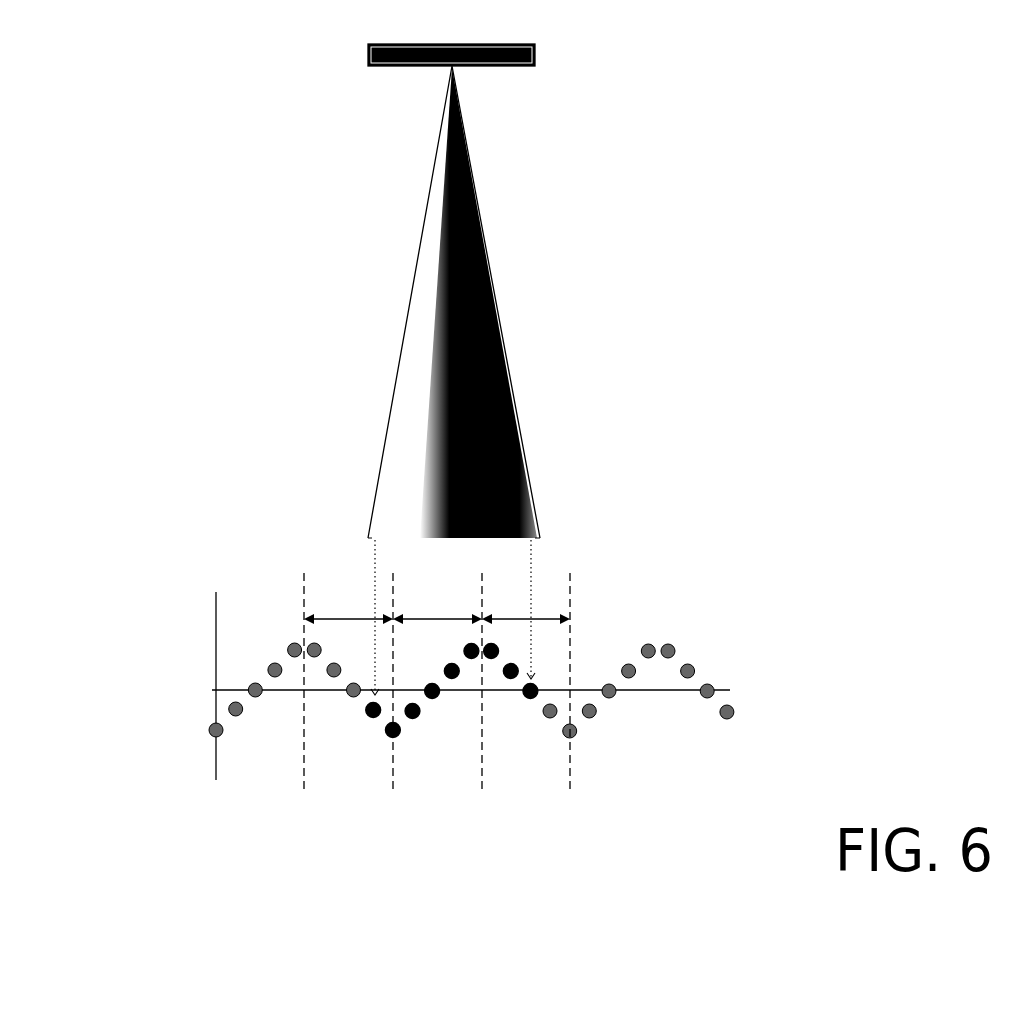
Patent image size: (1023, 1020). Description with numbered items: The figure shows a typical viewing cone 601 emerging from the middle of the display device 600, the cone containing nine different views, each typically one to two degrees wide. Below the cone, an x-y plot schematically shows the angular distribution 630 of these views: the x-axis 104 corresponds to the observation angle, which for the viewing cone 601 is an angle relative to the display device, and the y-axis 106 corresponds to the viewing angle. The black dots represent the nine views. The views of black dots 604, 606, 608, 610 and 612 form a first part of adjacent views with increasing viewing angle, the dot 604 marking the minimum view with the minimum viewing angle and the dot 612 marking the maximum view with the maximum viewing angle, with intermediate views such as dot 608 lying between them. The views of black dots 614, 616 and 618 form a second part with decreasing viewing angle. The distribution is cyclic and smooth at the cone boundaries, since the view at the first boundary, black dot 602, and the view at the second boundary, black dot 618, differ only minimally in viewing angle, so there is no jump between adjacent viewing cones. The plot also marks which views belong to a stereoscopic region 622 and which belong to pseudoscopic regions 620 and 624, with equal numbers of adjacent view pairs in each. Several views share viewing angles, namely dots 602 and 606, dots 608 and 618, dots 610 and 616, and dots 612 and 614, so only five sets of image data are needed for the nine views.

The display device 600 is at (523, 59).
The viewing cone 601 is at (490, 263).
The black dot at first boundary of viewing cone 602 is at (372, 717).
The black dot of minimum view 604 is at (392, 737).
The black dot of view 606 is at (412, 718).
The black dot of view 608 is at (434, 698).
The black dot of view 610 is at (453, 678).
The black dot of maximum view 612 is at (471, 658).
The black dot of view 614 is at (490, 658).
The black dot of view 616 is at (512, 678).
The black dot at second boundary of viewing cone 618 is at (532, 698).
The pseudoscopic region 620 is at (348, 681).
The stereoscopic region 622 is at (437, 681).
The pseudoscopic region 624 is at (526, 681).
The angular distribution 630 is at (443, 716).
The x-axis 104 is at (687, 692).
The y-axis 106 is at (216, 637).